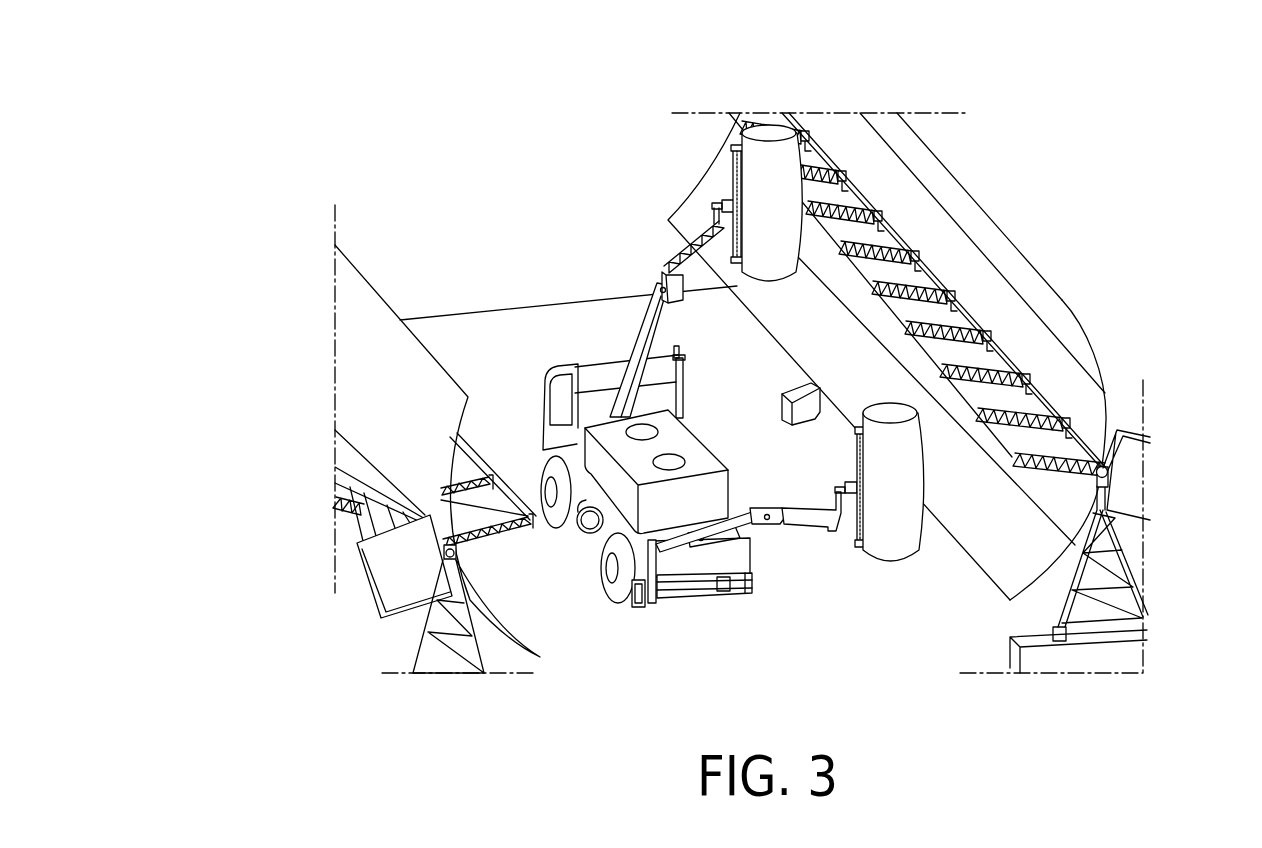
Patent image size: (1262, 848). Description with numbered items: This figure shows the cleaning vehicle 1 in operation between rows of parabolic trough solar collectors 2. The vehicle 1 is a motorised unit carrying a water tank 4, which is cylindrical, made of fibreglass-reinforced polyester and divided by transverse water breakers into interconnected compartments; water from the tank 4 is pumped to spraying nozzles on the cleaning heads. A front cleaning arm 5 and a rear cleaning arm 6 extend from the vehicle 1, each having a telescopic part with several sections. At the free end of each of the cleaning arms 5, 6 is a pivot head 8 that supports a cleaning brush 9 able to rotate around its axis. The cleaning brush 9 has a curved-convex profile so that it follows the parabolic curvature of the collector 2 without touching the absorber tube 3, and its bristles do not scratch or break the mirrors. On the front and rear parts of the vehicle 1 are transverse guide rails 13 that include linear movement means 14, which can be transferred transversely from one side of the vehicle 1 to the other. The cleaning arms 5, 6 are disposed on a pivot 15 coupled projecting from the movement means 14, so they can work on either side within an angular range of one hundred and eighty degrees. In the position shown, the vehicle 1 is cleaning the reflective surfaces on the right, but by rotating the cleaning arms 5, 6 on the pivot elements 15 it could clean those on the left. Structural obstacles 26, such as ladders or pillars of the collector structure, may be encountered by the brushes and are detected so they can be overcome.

The cleaning vehicle 1 is at (558, 343).
The parabolic trough solar collectors 2 is at (360, 377).
The absorber tube 3 is at (447, 560).
The water tank 4 is at (705, 497).
The front cleaning arm 5 is at (662, 277).
The rear cleaning arm 6 is at (780, 523).
The pivot head 8 is at (732, 162).
The cleaning brush 9 is at (767, 158).
The transverse guide rails 13 is at (733, 597).
The linear movement means 14 is at (660, 607).
The pivot 15 is at (638, 607).
The obstacle 26 is at (907, 297).